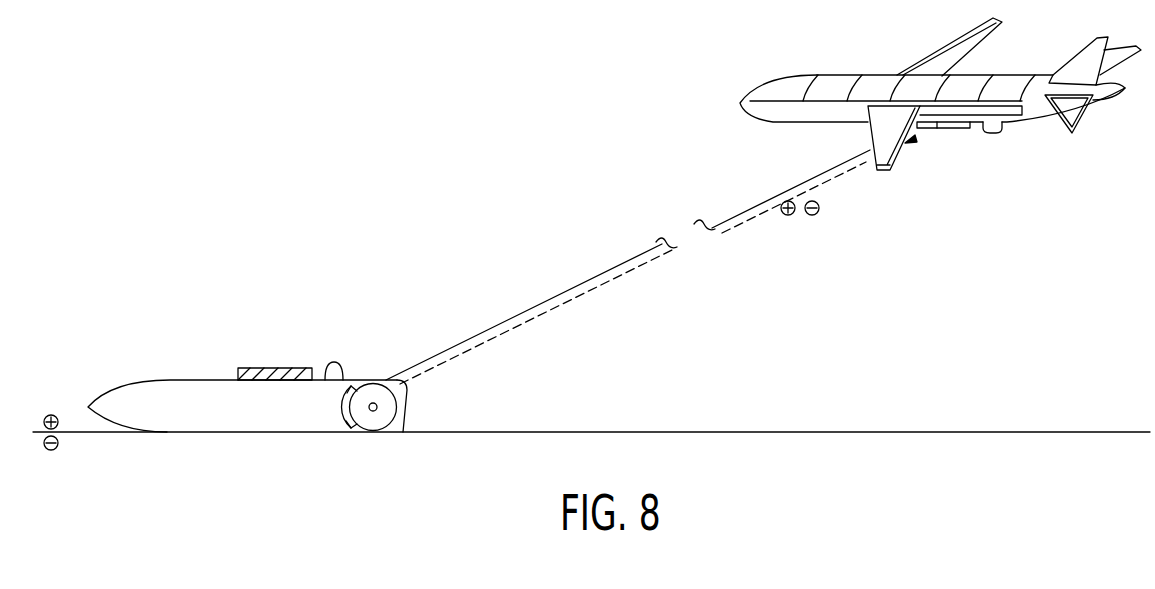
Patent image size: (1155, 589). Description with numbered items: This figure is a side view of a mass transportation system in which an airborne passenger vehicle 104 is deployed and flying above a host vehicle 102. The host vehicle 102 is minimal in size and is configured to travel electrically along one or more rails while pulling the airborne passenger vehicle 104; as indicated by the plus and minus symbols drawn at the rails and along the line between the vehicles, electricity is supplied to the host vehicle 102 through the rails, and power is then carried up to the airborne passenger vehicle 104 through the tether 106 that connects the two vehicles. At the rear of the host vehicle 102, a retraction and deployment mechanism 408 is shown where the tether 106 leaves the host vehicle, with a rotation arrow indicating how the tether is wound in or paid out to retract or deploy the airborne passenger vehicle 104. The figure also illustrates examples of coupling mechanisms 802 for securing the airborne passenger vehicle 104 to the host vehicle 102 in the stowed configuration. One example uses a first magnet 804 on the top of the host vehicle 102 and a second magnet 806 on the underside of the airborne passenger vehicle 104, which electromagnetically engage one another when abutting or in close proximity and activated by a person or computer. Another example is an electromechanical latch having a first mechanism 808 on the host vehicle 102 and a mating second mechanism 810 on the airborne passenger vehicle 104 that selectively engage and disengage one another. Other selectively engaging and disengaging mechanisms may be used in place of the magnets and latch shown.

The host vehicle 102 is at (404, 392).
The airborne passenger vehicle 104 is at (772, 90).
The tether 106 is at (527, 312).
The retraction and deployment mechanism 408 is at (362, 394).
The coupling mechanism 802 is at (222, 307).
The first magnet 804 is at (274, 367).
The first mechanism 808 is at (333, 361).
The second magnet 806 is at (943, 128).
The second mechanism 810 is at (992, 133).